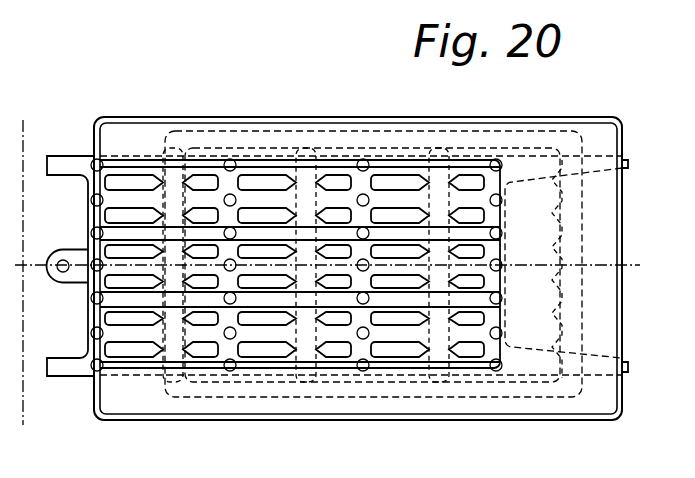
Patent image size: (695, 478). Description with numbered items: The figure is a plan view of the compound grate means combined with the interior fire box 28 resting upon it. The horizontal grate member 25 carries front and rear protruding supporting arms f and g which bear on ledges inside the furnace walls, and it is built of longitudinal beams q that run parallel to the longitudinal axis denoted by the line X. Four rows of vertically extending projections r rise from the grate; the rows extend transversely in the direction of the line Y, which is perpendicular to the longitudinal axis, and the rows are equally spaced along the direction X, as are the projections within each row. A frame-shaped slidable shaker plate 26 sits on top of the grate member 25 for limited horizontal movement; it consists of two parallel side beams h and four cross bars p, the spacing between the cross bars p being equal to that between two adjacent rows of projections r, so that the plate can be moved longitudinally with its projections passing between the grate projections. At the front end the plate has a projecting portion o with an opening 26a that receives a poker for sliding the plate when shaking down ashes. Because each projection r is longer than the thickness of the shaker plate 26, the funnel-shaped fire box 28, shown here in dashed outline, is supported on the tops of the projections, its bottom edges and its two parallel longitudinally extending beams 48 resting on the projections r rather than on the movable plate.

The horizontal grate member 25 is at (125, 156).
The slidable shaker plate 26 is at (383, 131).
The opening in projecting portion 26a is at (62, 268).
The interior fire box 28 is at (626, 205).
The longitudinally extending beams 48 is at (376, 236).
The front supporting arm f is at (60, 156).
The rear supporting arm g is at (626, 160).
The side beams h is at (510, 148).
The projecting portion o is at (57, 249).
The cross bars p is at (172, 382).
The longitudinal beams q is at (258, 196).
The vertically extending projections r is at (230, 371).
The longitudinal axis line X is at (331, 273).
The transverse axis line Y is at (20, 274).